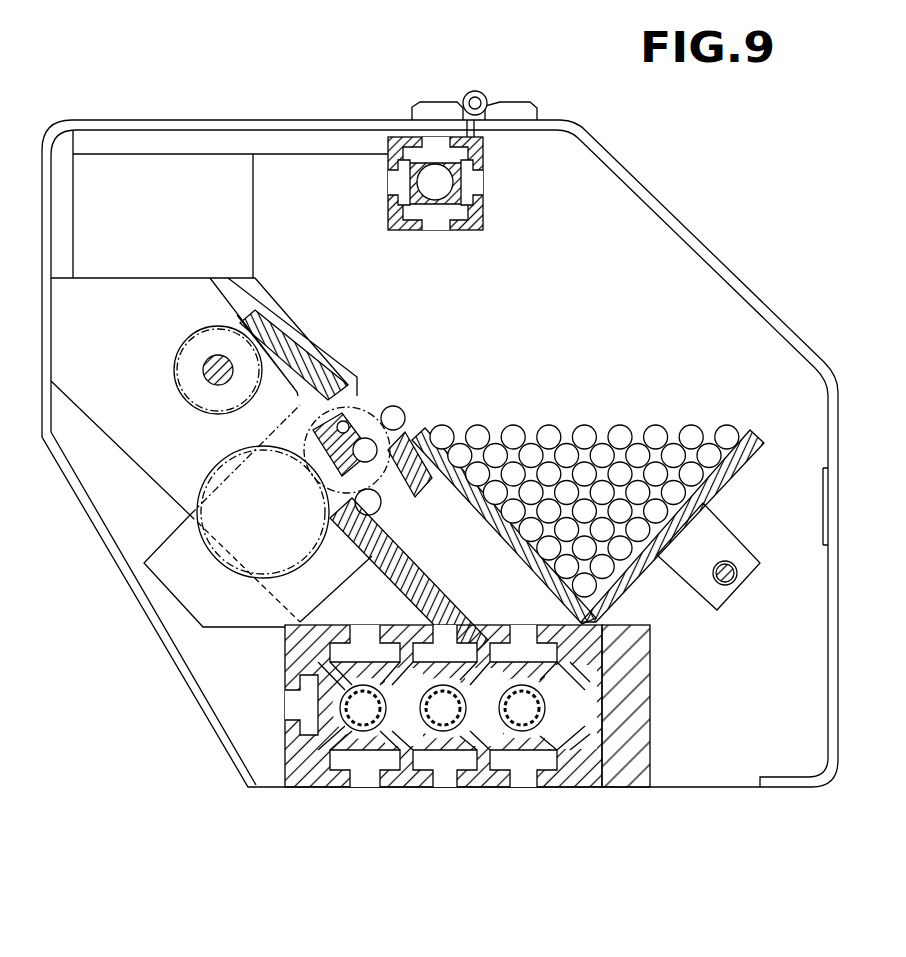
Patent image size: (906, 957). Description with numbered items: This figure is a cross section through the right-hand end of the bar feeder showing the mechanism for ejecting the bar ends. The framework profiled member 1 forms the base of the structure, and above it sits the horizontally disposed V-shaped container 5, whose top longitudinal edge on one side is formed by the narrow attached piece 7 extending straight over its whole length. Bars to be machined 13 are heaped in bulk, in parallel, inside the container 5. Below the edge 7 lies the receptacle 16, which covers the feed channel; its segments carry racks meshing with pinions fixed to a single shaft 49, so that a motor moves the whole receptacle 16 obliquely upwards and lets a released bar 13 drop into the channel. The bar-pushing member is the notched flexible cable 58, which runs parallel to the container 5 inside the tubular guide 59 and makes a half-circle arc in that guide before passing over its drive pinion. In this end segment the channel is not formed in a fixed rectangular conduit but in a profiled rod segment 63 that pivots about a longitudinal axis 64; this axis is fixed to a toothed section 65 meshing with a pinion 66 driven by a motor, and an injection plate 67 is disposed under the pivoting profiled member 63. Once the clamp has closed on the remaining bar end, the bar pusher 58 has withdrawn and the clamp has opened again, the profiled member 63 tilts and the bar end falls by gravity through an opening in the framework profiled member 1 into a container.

The framework profiled member 1 is at (333, 790).
The container 5 is at (752, 458).
The narrow attached piece 7 is at (420, 432).
The bars to be machined 13 is at (546, 428).
The receptacle 16 is at (195, 353).
The shaft 49 is at (216, 375).
The flexible cable (bar pusher) 58 is at (742, 598).
The tubular guide 59 is at (729, 562).
The profiled rod segment 63 is at (342, 428).
The longitudinal axis 64 is at (353, 424).
The toothed section 65 is at (300, 418).
The pinion 66 is at (269, 533).
The injection plate 67 is at (430, 597).